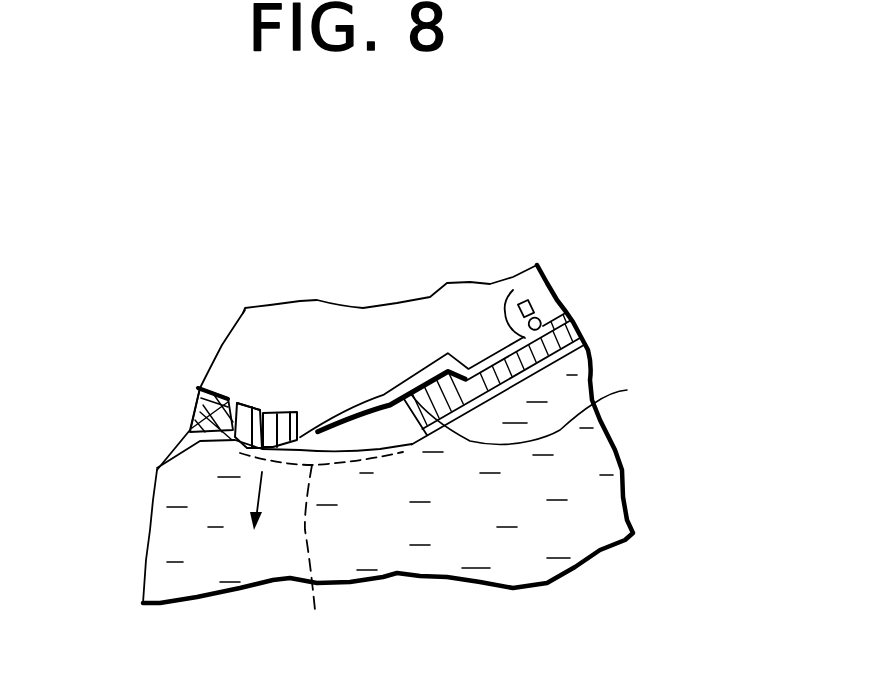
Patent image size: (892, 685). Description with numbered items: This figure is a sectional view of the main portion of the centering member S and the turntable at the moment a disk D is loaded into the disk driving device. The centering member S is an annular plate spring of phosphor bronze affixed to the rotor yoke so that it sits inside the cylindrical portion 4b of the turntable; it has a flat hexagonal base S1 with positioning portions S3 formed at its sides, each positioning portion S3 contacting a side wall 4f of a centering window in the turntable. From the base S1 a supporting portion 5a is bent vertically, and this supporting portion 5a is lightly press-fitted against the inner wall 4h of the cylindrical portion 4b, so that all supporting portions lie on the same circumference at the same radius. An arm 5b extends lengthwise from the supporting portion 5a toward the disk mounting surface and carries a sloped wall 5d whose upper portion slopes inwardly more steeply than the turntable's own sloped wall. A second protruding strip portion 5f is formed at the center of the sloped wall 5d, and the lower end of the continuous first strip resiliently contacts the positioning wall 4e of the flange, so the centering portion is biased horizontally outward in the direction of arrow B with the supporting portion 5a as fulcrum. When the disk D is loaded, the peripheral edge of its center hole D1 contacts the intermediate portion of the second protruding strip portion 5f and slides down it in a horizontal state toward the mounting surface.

The disk D is at (578, 518).
The center hole D1 is at (348, 435).
The centering member S is at (340, 340).
The base S1 is at (488, 320).
The positioning portion S3 is at (198, 392).
The cylindrical portion 4b is at (570, 327).
The positioning wall 4e is at (321, 550).
The side wall 4f is at (155, 469).
The inner wall 4h is at (627, 390).
The supporting portion 5a is at (525, 302).
The arm 5b is at (408, 393).
The sloped wall 5d is at (273, 403).
The second protruding strip portion 5f is at (240, 410).
The arrow B is at (254, 521).